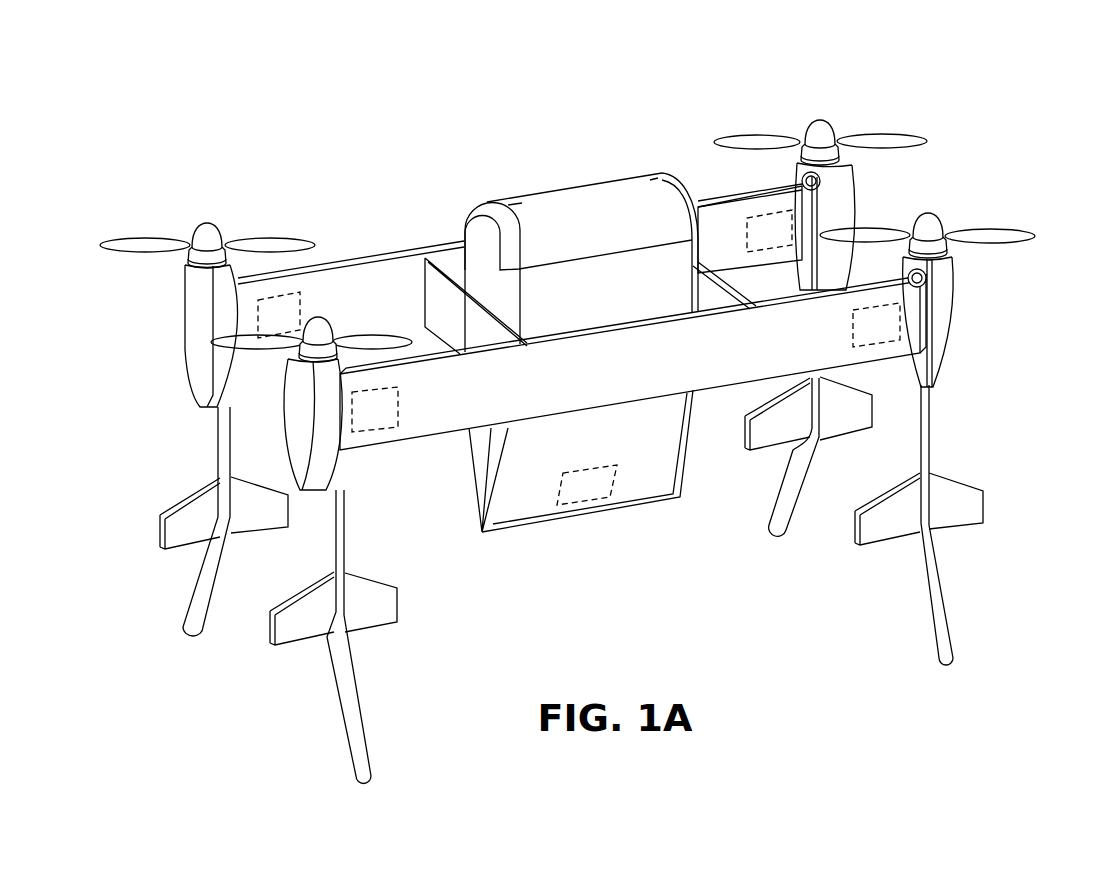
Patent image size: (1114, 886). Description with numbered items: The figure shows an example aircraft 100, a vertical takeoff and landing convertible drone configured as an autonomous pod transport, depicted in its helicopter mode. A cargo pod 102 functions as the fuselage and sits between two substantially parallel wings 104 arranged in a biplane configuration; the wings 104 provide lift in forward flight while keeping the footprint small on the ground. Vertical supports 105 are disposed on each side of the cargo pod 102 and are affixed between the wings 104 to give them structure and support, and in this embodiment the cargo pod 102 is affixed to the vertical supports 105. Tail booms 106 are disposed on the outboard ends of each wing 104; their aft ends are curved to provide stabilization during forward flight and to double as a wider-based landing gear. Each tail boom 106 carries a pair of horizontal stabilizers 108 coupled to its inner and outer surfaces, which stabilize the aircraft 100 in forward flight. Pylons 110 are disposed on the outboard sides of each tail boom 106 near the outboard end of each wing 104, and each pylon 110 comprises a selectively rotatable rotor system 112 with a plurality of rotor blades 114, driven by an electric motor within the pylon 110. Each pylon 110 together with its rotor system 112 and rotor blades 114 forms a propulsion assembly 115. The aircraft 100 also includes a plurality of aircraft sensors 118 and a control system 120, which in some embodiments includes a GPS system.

The aircraft 100 is at (432, 104).
The cargo pod 102 is at (560, 190).
The wings 104 is at (438, 241).
The vertical supports 105 is at (495, 338).
The tail booms 106 is at (191, 617).
The horizontal stabilizers 108 is at (177, 533).
The pylons 110 is at (190, 332).
The rotor system 112 is at (205, 215).
The rotor blades 114 is at (122, 240).
The propulsion assembly 115 is at (585, 252).
The aircraft sensors 118 is at (256, 308).
The control system 120 is at (576, 506).